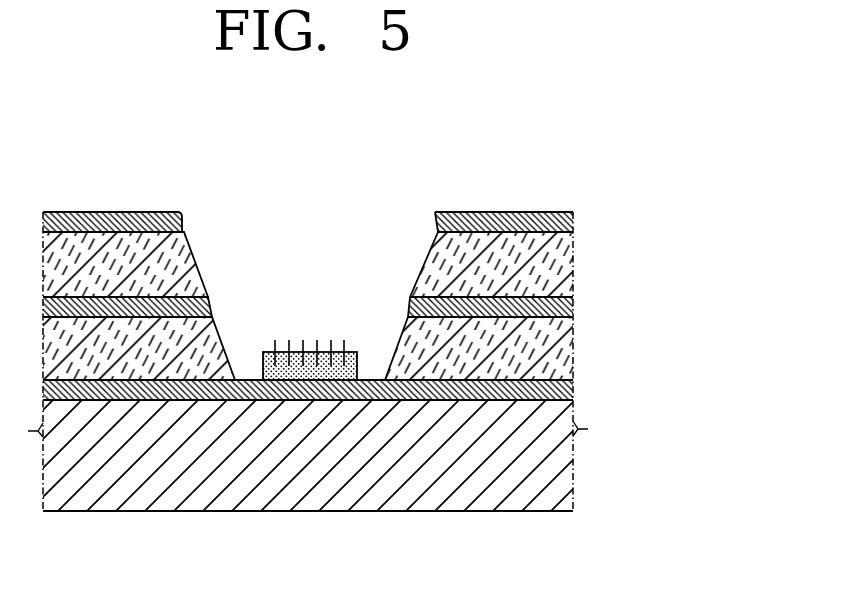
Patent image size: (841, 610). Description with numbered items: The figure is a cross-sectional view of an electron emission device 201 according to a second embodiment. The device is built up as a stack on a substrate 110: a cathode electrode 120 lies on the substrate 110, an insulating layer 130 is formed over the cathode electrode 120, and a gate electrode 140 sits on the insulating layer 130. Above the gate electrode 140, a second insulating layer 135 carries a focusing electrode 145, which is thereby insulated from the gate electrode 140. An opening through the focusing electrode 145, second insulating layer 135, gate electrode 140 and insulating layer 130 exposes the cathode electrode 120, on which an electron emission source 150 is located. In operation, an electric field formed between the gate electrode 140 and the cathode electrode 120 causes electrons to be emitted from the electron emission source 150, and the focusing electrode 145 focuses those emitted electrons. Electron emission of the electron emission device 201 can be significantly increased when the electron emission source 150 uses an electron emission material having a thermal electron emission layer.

The electron emission device 201 is at (589, 183).
The substrate 110 is at (566, 455).
The cathode electrode 120 is at (568, 392).
The insulating layer 130 is at (565, 345).
The second insulating layer 135 is at (568, 275).
The gate electrode 140 is at (570, 310).
The focusing electrode 145 is at (573, 220).
The electron emission source 150 is at (357, 360).